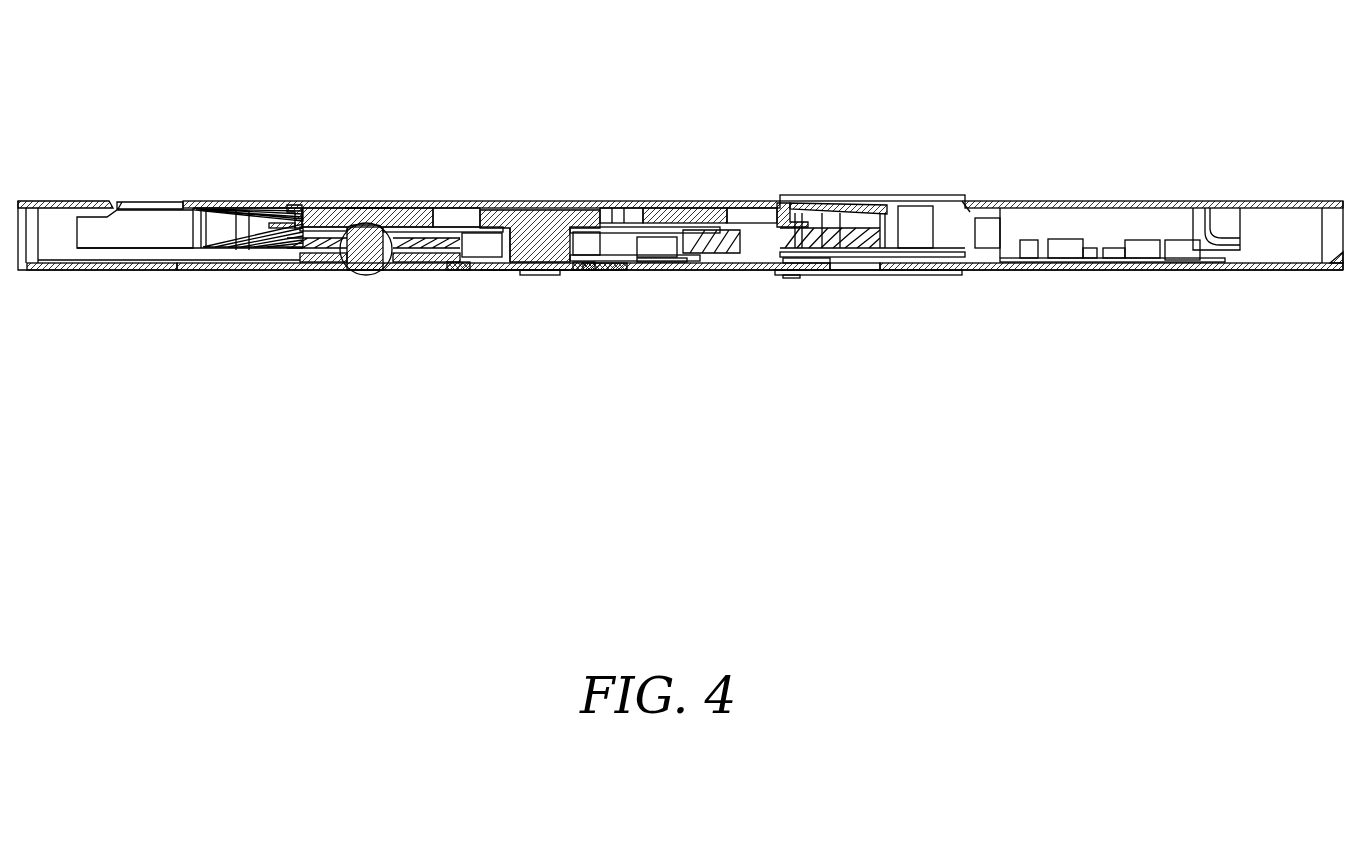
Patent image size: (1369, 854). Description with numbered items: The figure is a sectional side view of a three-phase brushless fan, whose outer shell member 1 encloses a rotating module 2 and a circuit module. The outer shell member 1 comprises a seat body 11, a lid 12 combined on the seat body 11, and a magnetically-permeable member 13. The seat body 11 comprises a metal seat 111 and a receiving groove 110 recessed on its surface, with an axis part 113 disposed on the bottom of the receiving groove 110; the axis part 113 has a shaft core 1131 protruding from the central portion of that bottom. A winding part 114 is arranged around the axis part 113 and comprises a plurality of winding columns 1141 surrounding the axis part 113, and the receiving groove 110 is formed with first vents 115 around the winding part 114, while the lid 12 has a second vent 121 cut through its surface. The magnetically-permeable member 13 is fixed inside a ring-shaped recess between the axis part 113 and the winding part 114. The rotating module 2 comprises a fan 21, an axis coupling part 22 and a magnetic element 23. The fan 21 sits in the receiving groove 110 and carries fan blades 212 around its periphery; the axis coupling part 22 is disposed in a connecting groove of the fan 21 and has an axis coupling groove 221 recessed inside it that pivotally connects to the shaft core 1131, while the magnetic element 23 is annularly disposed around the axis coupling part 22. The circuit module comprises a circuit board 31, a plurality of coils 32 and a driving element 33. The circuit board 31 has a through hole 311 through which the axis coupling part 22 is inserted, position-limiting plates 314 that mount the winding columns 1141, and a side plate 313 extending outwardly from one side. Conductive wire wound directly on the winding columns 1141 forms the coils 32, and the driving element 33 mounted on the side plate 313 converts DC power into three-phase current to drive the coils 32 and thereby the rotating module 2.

The outer shell member 1 is at (1045, 138).
The rotating module 2 is at (502, 148).
The seat body 11 is at (1018, 330).
The lid 12 is at (1045, 203).
The magnetically-permeable member 13 is at (650, 267).
The fan 21 is at (447, 237).
The axis coupling part 22 is at (430, 320).
The magnetic element 23 is at (418, 212).
The circuit board 31 is at (735, 258).
The coils 32 is at (342, 252).
The driving element 33 is at (1134, 250).
The receiving groove 110 is at (62, 242).
The metal seat 111 is at (1013, 268).
The axis part 113 is at (538, 347).
The winding part 114 is at (371, 140).
The first vents 115 is at (180, 265).
The second vent 121 is at (110, 200).
The fan blades 212 is at (95, 230).
The axis coupling groove 221 is at (523, 243).
The through hole 311 is at (633, 262).
The side plate 313 is at (982, 262).
The position-limiting plates 314 is at (312, 232).
The shaft core 1131 is at (538, 275).
The winding columns 1141 is at (368, 233).